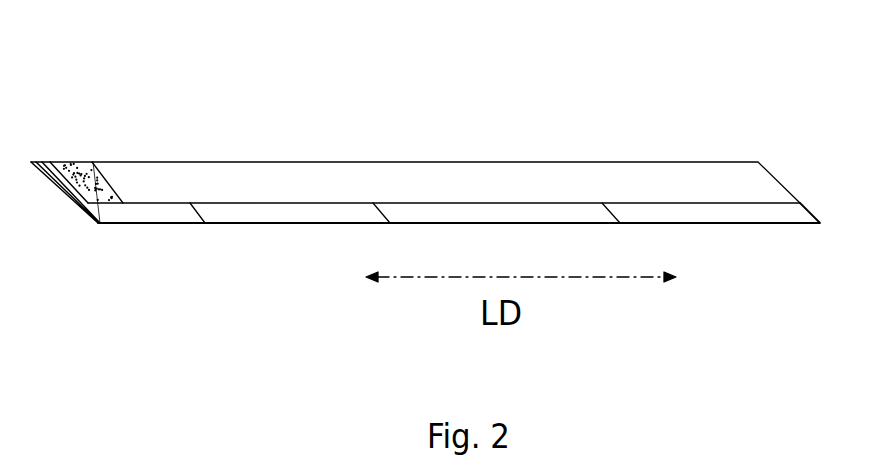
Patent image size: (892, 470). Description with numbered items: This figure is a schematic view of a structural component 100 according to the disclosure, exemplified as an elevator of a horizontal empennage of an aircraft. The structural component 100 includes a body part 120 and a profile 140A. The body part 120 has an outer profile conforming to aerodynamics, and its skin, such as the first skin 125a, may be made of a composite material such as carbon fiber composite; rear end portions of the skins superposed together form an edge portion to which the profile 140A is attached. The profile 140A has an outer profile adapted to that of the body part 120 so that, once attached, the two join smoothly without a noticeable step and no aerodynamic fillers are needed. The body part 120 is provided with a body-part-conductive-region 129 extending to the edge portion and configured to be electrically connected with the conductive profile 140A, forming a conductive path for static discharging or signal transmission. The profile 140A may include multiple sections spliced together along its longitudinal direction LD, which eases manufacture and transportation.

The structural component 100 is at (409, 114).
The body part 120 is at (300, 172).
The first skin 125a is at (592, 196).
The body-part-conductive-region 129 is at (92, 167).
The profile 140A is at (343, 218).